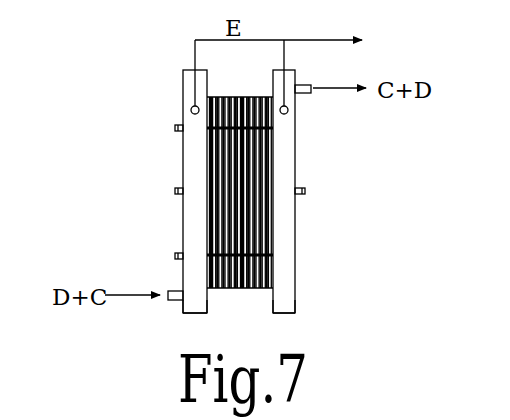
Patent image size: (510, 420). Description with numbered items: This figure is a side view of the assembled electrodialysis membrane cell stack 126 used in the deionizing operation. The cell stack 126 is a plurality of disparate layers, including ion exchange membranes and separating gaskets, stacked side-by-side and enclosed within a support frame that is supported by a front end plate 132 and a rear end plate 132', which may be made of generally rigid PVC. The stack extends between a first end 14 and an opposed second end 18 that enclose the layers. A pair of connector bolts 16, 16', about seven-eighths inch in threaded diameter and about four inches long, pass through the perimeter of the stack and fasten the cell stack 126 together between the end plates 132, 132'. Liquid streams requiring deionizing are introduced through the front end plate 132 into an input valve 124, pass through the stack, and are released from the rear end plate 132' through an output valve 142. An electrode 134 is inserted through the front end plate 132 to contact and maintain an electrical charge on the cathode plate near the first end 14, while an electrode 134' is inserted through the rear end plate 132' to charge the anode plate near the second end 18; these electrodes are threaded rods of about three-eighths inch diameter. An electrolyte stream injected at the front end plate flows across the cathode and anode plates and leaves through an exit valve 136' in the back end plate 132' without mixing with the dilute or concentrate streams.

The first end 14 is at (183, 101).
The connector bolt 16 is at (131, 129).
The connector bolt 16' is at (132, 254).
The second end 18 is at (295, 153).
The input valve 124 is at (166, 288).
The electrodialysis membrane cell stack 126 is at (245, 97).
The front end plate 132 is at (156, 317).
The rear end plate 132' is at (336, 283).
The electrode 134 is at (120, 180).
The electrode 134' is at (361, 190).
The exit valve 136' is at (245, 72).
The output valve 142 is at (312, 84).